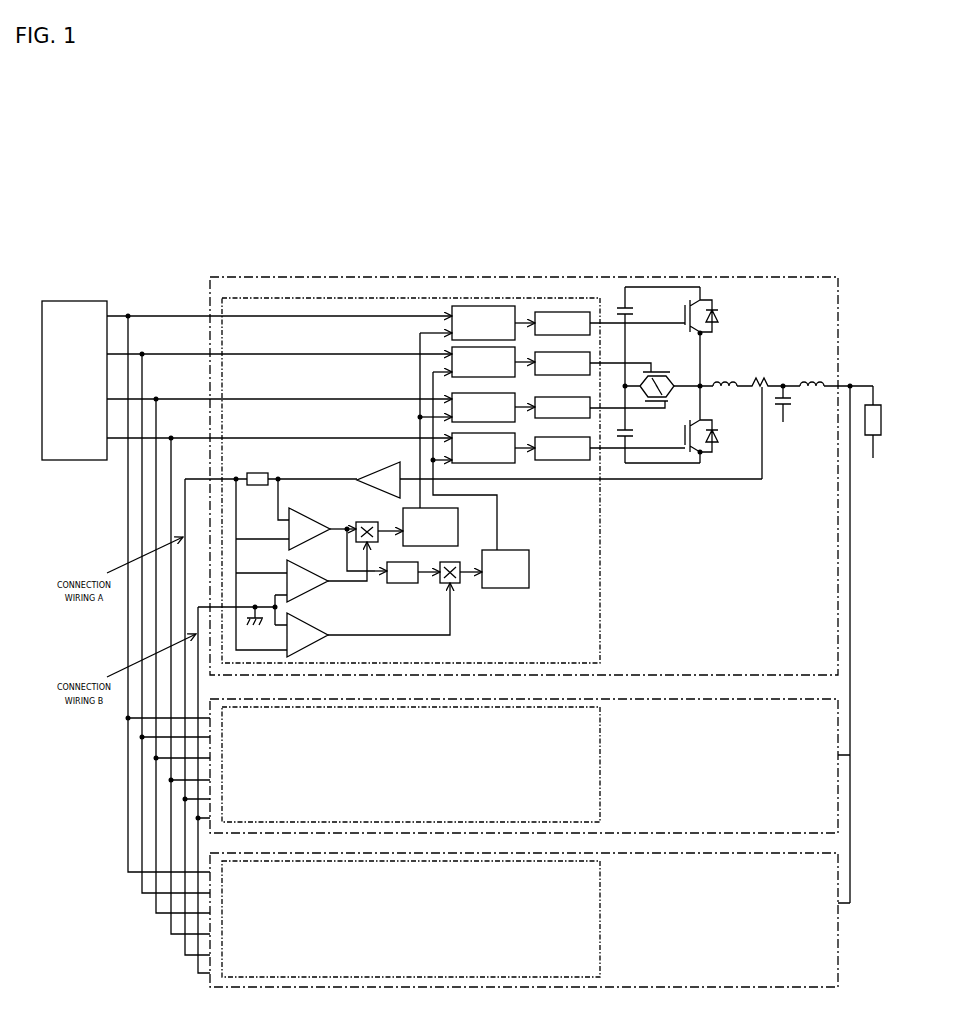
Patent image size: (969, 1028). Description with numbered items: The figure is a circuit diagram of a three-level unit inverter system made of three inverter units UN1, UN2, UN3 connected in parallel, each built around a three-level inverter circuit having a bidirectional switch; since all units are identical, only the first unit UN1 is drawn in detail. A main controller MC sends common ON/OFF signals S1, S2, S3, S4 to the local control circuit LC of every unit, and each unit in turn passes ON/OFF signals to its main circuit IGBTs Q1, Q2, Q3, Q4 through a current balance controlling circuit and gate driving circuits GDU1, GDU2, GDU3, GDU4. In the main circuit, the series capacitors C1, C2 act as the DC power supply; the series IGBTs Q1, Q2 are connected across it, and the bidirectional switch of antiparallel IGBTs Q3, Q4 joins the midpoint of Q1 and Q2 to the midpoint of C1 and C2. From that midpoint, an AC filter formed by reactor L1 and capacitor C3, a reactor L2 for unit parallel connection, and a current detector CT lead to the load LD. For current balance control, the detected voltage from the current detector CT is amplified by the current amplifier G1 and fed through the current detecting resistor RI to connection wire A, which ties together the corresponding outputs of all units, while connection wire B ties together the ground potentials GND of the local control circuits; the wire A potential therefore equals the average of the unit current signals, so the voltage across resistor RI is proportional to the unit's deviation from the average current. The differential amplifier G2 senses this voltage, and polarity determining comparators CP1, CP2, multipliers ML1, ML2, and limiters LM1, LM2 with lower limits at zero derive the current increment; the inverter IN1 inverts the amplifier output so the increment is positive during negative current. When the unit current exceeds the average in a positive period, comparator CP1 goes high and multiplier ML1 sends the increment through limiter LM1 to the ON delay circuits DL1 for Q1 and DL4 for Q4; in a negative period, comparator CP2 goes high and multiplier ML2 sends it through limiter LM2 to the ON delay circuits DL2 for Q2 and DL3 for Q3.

The main controller MC is at (66, 298).
The control signal S1 is at (269, 317).
The control signal S2 is at (269, 439).
The control signal S3 is at (269, 355).
The control signal S4 is at (269, 400).
The inverter unit UN1 is at (838, 330).
The inverter unit UN2 is at (838, 804).
The inverter unit UN3 is at (840, 951).
The local control circuit LC is at (598, 626).
The ON delay circuit DL1 is at (478, 306).
The ON delay circuit DL2 is at (482, 463).
The ON delay circuit DL3 is at (498, 377).
The ON delay circuit DL4 is at (498, 422).
The gate drive unit GDU1 is at (562, 323).
The gate drive unit GDU2 is at (562, 448).
The gate drive unit GDU3 is at (562, 363).
The gate drive unit GDU4 is at (562, 407).
The IGBT Q1 is at (710, 336).
The IGBT Q2 is at (710, 425).
The IGBT Q3 is at (663, 376).
The IGBT Q4 is at (679, 400).
The capacitor C1 is at (639, 336).
The capacitor C2 is at (639, 424).
The capacitor C3 is at (795, 403).
The reactor L1 is at (725, 374).
The reactor L2 is at (836, 374).
The current detector CT is at (760, 420).
The load LD is at (875, 421).
The current detecting resistor RI is at (257, 470).
The current amplifier G1 is at (378, 475).
The output current deviation detecting amplifier G2 is at (309, 527).
The multiplier ML1 is at (368, 523).
The multiplier ML2 is at (437, 588).
The limiter circuit LM1 is at (448, 527).
The limiter circuit LM2 is at (523, 569).
The polarity determining comparator CP1 is at (308, 578).
The polarity determining comparator CP2 is at (308, 632).
The inverter IN1 is at (400, 584).
The ground potential GND is at (254, 626).